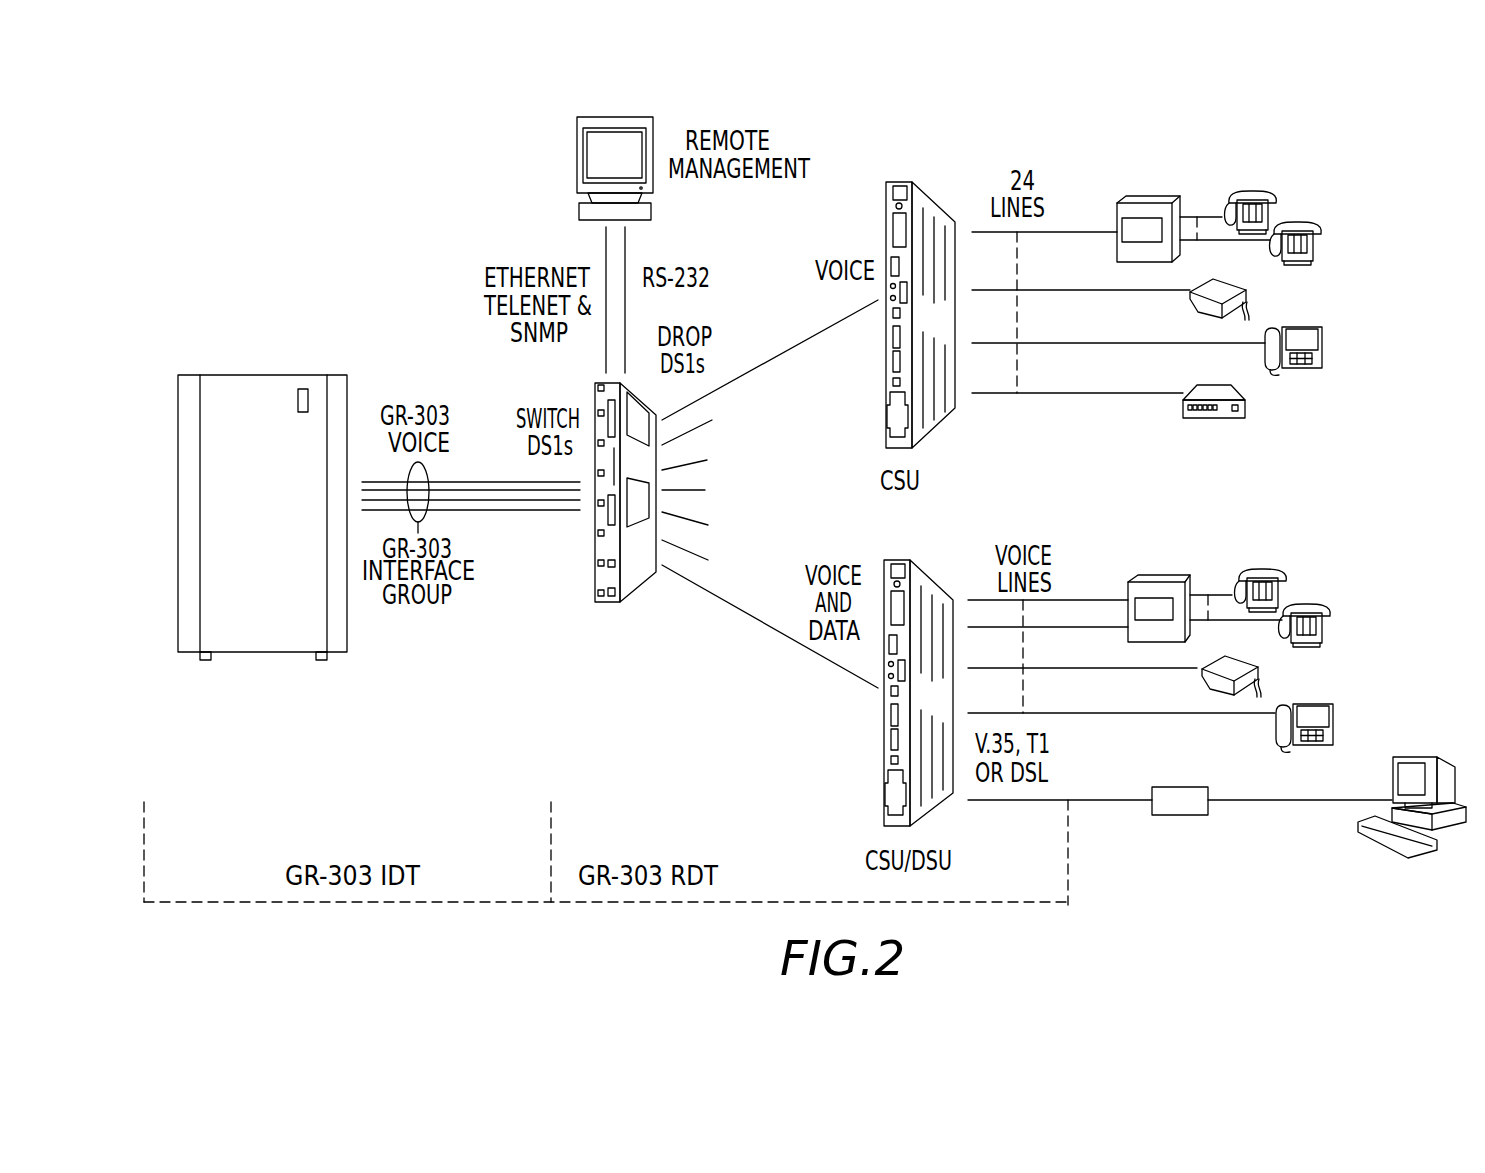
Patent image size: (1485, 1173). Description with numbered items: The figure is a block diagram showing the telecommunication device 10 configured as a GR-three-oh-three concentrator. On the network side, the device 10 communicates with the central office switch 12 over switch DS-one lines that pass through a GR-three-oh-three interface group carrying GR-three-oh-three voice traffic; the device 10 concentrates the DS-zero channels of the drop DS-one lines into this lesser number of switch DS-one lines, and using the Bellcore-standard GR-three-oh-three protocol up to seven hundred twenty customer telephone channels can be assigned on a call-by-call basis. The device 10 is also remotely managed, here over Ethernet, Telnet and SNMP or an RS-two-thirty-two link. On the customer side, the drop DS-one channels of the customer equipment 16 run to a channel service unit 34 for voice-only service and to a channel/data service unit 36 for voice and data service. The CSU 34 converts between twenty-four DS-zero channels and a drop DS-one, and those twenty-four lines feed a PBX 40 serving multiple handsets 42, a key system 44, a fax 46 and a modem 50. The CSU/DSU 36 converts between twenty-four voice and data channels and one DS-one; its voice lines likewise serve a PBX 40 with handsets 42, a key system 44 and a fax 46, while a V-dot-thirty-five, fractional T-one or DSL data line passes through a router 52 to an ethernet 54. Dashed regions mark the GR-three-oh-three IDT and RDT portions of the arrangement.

The telecommunication device 10 is at (642, 602).
The central office switch 12 is at (334, 662).
The customer equipment 16 is at (832, 728).
The channel service unit (CSU) 34 is at (865, 235).
The channel/data service unit (CSU/DSU) 36 is at (948, 815).
The PBX 40 is at (1175, 200).
The handsets 42 is at (1260, 193).
The key system 44 is at (1200, 311).
The fax 46 is at (1323, 366).
The modem 50 is at (1185, 414).
The router 52 is at (1210, 810).
The ethernet 54 is at (1447, 830).